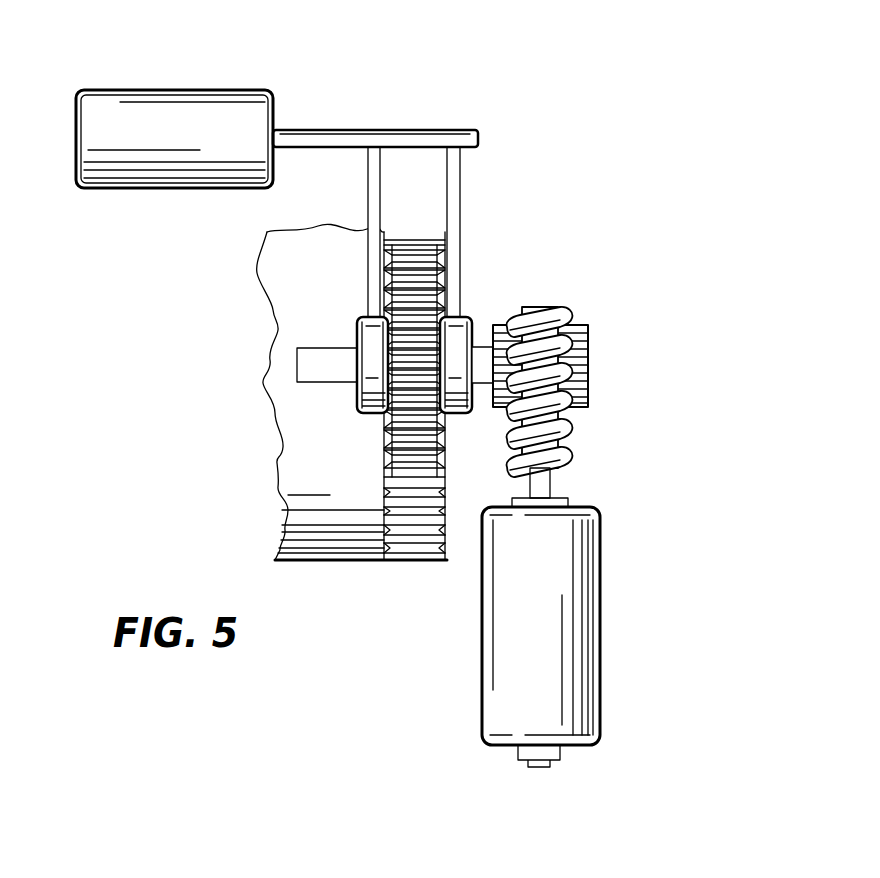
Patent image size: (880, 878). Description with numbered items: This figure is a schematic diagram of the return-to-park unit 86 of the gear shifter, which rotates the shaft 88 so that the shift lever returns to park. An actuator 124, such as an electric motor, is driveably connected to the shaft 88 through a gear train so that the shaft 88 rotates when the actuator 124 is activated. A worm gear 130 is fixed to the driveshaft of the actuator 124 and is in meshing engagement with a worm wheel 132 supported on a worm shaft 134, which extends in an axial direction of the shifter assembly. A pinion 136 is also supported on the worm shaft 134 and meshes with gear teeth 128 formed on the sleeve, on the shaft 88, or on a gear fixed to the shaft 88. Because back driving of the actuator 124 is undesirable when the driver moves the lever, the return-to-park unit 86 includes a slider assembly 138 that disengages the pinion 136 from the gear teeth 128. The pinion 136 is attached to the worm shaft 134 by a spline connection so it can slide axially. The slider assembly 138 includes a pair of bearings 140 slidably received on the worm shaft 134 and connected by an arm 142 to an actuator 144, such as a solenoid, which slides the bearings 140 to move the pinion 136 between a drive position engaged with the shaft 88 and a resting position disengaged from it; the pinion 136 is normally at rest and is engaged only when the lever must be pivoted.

The return-to-park unit 86 is at (580, 230).
The shaft 88 is at (277, 422).
The actuator 124 is at (600, 625).
The gear teeth 128 is at (415, 537).
The worm gear 130 is at (575, 440).
The worm wheel 132 is at (588, 365).
The worm shaft 134 is at (482, 347).
The pinion 136 is at (417, 440).
The slider assembly 138 is at (362, 100).
The bearings 140 is at (357, 332).
The arm 142 is at (464, 230).
The actuator 144 is at (171, 90).